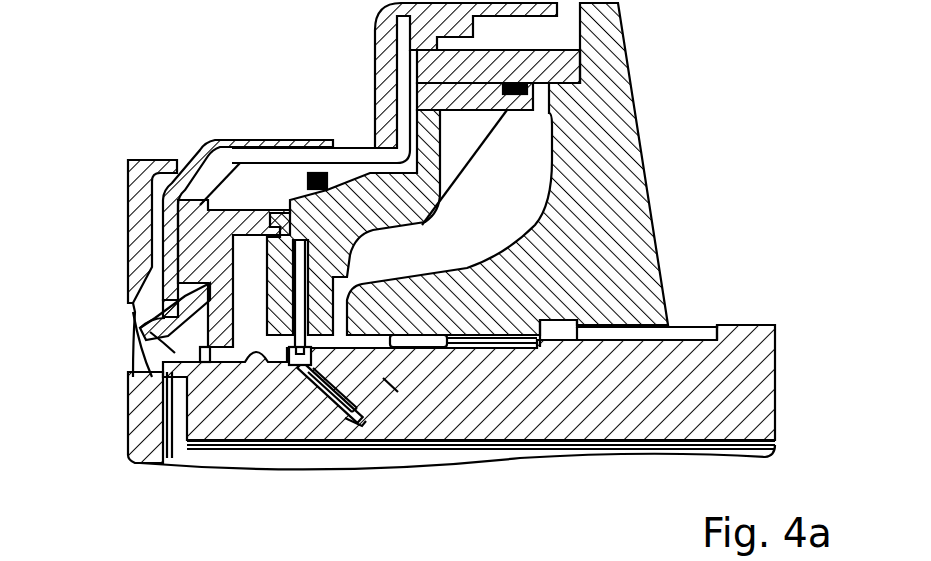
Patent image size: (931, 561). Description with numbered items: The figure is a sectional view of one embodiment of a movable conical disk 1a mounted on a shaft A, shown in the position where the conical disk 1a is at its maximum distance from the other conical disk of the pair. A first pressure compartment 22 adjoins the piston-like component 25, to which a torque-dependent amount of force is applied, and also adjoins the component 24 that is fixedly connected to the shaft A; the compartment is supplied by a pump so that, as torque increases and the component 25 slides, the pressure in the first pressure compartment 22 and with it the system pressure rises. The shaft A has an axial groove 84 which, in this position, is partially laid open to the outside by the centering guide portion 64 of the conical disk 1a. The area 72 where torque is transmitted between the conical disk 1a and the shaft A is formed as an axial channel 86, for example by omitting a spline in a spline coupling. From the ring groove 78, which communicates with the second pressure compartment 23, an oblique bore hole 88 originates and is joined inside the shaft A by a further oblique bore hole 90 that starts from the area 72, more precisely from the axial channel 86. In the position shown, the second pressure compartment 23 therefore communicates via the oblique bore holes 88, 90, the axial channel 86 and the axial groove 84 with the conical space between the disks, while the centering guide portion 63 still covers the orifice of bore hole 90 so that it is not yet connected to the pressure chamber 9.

The conical disk 1a is at (618, 162).
The pressure chamber 9 is at (517, 178).
The first pressure compartment 22 is at (173, 353).
The second pressure compartment 23 is at (355, 183).
The component 24 is at (398, 106).
The piston-like component 25 is at (195, 293).
The centering guide portion 63 is at (393, 383).
The centering guide portion 64 is at (635, 317).
The area 72 is at (533, 350).
The ring groove 78 is at (293, 372).
The axial groove 84 is at (690, 333).
The axial channel 86 is at (513, 347).
The oblique bore hole 88 is at (335, 400).
The oblique bore hole 90 is at (390, 383).
The shaft A is at (758, 327).